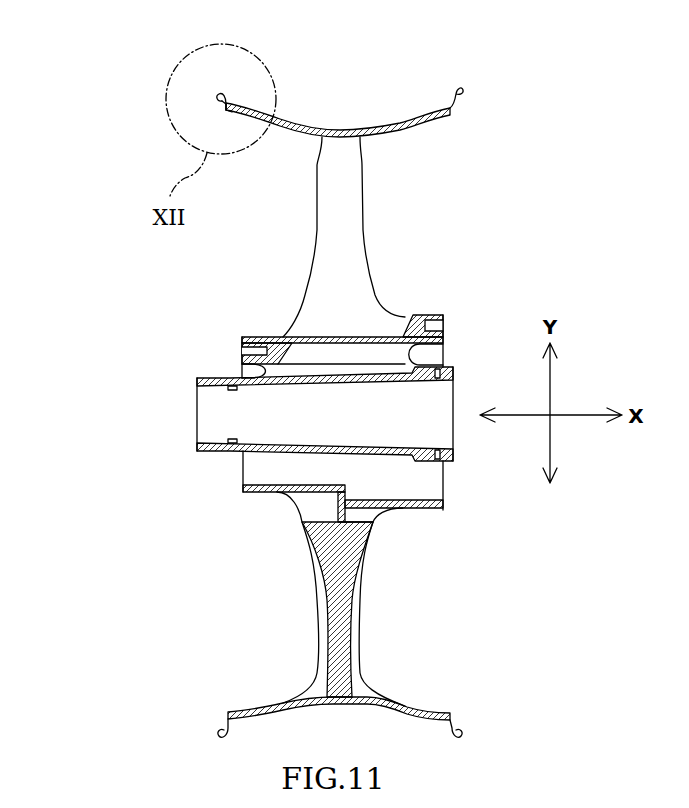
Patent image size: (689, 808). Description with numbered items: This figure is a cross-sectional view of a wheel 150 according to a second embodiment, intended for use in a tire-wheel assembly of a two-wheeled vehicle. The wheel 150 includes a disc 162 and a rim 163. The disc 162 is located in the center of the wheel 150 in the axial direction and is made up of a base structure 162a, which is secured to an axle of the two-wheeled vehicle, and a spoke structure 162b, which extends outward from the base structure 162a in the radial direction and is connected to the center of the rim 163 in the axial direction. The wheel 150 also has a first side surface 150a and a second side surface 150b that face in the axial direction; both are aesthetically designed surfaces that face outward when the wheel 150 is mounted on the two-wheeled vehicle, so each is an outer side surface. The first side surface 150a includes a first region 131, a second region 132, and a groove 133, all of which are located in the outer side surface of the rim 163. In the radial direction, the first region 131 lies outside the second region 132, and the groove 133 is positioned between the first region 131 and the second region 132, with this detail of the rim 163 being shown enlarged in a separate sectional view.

The first region 131 is at (222, 95).
The groove 133 is at (222, 100).
The second region 132 is at (228, 104).
The wheel 150 is at (522, 109).
The first side surface 150a is at (226, 723).
The second side surface 150b is at (453, 723).
The disc 162 is at (98, 262).
The base structure 162a is at (212, 378).
The spoke structure 162b is at (305, 262).
The rim 163 is at (397, 122).